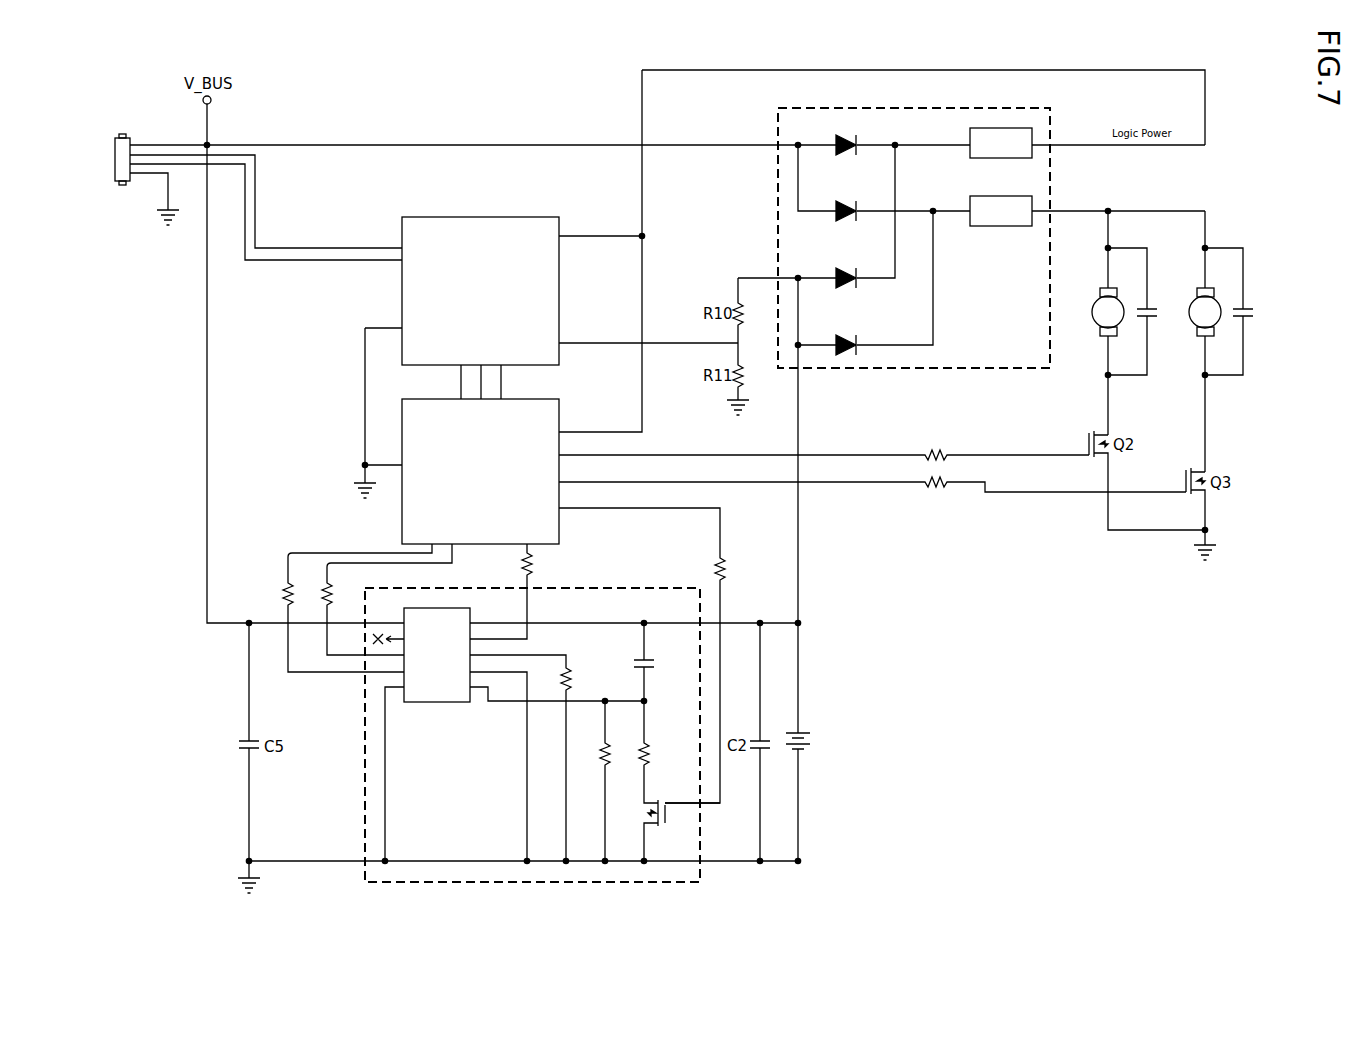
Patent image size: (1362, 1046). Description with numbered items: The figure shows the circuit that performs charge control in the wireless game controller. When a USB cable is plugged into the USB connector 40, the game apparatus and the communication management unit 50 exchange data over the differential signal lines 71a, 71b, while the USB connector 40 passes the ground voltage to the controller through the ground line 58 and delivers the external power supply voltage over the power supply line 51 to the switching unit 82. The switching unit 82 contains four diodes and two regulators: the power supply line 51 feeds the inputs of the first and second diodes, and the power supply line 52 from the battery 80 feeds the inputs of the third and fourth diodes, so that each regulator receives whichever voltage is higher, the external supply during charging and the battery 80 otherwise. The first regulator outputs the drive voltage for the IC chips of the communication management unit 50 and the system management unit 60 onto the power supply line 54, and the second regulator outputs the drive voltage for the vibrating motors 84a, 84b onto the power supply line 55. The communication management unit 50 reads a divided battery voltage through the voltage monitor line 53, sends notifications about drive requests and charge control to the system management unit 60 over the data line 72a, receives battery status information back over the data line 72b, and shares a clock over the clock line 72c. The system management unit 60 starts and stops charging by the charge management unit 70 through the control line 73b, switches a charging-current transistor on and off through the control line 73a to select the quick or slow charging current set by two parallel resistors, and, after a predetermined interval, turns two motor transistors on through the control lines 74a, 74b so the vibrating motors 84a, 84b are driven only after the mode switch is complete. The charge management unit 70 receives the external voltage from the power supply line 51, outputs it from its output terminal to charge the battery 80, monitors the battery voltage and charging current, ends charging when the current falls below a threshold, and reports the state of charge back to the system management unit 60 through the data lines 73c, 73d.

The USB connector 40 is at (118, 134).
The power supply line 51 is at (168, 145).
The ground line 58 is at (150, 176).
The differential signal line 71a is at (282, 248).
The differential signal line 71b is at (282, 260).
The communication management unit 50 is at (481, 217).
The data line 72a is at (461, 380).
The data line 72b is at (473, 377).
The clock line 72c is at (501, 386).
The voltage monitor line 53 is at (667, 343).
The power supply line 54 is at (922, 70).
The switching unit 82 is at (1053, 125).
The power supply line 55 is at (1079, 211).
The power supply line 52 is at (800, 407).
The system management unit 60 is at (559, 525).
The charge management unit 70 is at (628, 588).
The control line 73a is at (722, 520).
The control line 73b is at (522, 555).
The data line 73c is at (330, 562).
The data line 73d is at (292, 552).
The control line 74a is at (858, 455).
The control line 74b is at (858, 482).
The battery 80 is at (804, 727).
The vibrating motor 84a is at (1097, 355).
The vibrating motor 84b is at (1192, 355).